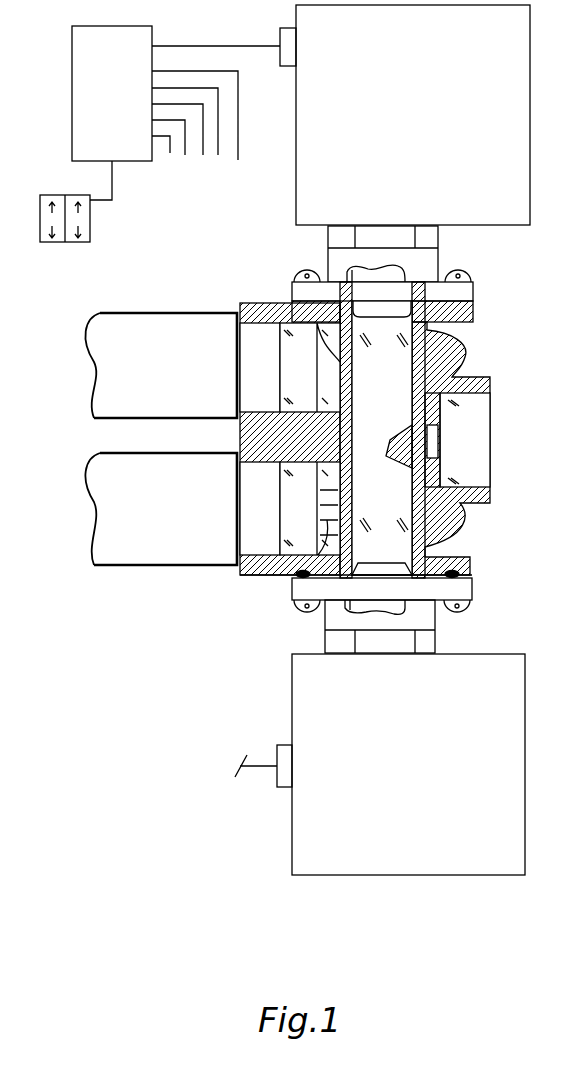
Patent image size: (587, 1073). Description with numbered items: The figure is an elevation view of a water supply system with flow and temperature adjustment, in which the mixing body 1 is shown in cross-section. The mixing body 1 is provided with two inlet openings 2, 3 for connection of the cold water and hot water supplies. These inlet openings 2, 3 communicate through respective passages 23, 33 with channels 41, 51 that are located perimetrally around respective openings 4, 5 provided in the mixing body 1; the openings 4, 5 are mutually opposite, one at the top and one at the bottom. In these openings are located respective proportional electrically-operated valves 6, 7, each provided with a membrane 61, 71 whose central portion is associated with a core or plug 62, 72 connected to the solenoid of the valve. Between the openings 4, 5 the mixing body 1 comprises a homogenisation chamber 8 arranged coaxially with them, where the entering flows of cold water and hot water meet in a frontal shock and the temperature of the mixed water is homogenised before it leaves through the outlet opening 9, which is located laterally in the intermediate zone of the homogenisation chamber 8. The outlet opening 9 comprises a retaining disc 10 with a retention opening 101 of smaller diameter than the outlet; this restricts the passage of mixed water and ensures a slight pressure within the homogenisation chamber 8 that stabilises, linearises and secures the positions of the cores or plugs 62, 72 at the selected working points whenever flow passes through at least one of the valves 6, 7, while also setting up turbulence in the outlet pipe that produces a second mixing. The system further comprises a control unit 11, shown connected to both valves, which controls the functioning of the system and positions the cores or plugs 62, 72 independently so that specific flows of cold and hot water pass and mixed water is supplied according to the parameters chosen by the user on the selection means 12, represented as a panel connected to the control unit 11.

The mixing body 1 is at (466, 516).
The cold water inlet opening 2 is at (284, 308).
The hot water inlet opening 3 is at (292, 560).
The first opening 4 is at (428, 330).
The first perimetral channel 41 is at (445, 285).
The second opening 5 is at (448, 546).
The second perimetral channel 51 is at (460, 603).
The first proportional electrically-operated valve 6 is at (507, 122).
The first membrane 61 is at (410, 283).
The first core or plug 62 is at (377, 282).
The second proportional electrically-operated valve 7 is at (500, 743).
The second membrane 71 is at (437, 604).
The second core or plug 72 is at (377, 600).
The homogenisation chamber 8 is at (382, 380).
The outlet opening 9 is at (468, 410).
The retaining disc 10 is at (438, 464).
The retention opening 101 is at (433, 438).
The control unit 11 is at (76, 104).
The selection means 12 is at (63, 243).
The first passage 23 is at (340, 363).
The second passage 33 is at (323, 587).